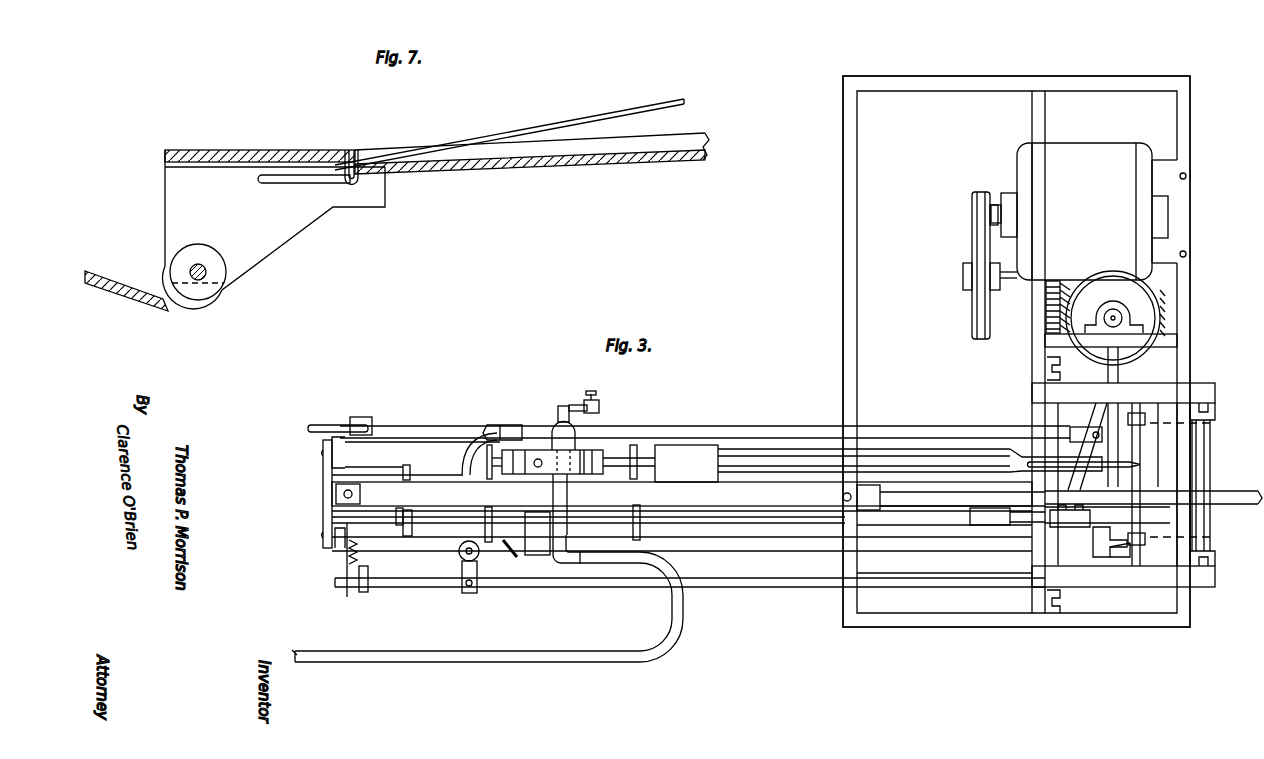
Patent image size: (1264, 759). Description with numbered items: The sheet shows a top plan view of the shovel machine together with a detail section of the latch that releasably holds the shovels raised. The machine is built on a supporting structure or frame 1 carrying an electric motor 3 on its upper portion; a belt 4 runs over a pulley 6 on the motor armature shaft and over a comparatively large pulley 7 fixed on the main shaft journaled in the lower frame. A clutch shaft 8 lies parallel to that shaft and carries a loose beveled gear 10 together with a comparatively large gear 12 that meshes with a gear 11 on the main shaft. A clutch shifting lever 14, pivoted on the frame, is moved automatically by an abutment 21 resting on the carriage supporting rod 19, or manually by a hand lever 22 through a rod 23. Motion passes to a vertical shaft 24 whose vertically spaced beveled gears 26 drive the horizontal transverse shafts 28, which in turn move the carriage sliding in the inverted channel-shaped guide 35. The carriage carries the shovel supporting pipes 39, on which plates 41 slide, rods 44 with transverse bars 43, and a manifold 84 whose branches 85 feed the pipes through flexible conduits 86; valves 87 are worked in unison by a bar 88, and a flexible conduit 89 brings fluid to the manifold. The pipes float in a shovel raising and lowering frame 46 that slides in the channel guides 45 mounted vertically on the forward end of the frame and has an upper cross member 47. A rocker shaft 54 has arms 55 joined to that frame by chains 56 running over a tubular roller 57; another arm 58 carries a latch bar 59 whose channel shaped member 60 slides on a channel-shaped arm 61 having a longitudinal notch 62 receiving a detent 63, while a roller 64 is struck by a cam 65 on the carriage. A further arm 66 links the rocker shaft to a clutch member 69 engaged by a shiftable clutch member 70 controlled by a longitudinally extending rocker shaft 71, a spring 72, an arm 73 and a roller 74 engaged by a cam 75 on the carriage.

In FIG. 3, the supporting structure or frame 1 is at (842, 170).
In FIG. 3, the electric motor 3 is at (1100, 152).
In FIG. 3, the belt 4 is at (975, 251).
In FIG. 3, the pulley 6 is at (972, 200).
In FIG. 3, the comparatively large pulley 7 is at (972, 314).
In FIG. 3, the clutch shaft 8 is at (1010, 282).
In FIG. 3, the beveled gear 10 is at (1163, 300).
In FIG. 3, the gear 11 is at (1058, 302).
In FIG. 3, the comparatively large gear 12 is at (1050, 326).
In FIG. 3, the clutch shifting lever 14 is at (1097, 412).
In FIG. 3, the carriage supporting rod 19 is at (442, 520).
In FIG. 3, the abutment 21 is at (405, 466).
In FIG. 3, the hand lever 22 is at (310, 430).
In FIG. 3, the rod 23 is at (412, 428).
In FIG. 3, the shaft 24 is at (1122, 318).
In FIG. 3, the vertically spaced beveled gears 26 is at (1140, 292).
In FIG. 3, the horizontal transverse shafts 28 is at (1048, 488).
In FIG. 3, the inverted channel-shaped guide 35 is at (682, 494).
In FIG. 3, the shovel supporting pipes 39 is at (902, 500).
In FIG. 3, the plates 41 is at (642, 530).
In FIG. 3, the transverse bars 43 is at (525, 557).
In FIG. 3, the rods 44 is at (622, 458).
In FIG. 3, the cross bars 45 is at (1212, 402).
In FIG. 3, the shovel raising and lowering frame 46 is at (1210, 444).
In FIG. 3, the upper cross member 47 is at (1206, 452).
In FIG. 3, the rocker shaft 54 is at (1140, 486).
In FIG. 3, the arms 55 is at (1135, 410).
In FIG. 3, the chains 56 is at (1152, 420).
In FIG. 3, the tubular roller 57 is at (1183, 524).
In FIG. 3, the arm 58 is at (1133, 468).
In FIG. 7, the latch bar 59 is at (612, 112).
In FIG. 3, the latch bar 59 is at (779, 457).
In FIG. 7, the channel shaped member 60 is at (165, 188).
In FIG. 3, the channel shaped member 60 is at (686, 463).
In FIG. 7, the channel-shaped arm 61 is at (645, 159).
In FIG. 3, the channel-shaped arm 61 is at (878, 436).
In FIG. 7, the longitudinal notch 62 is at (290, 184).
In FIG. 7, the detent 63 is at (355, 186).
In FIG. 7, the roller 64 is at (208, 292).
In FIG. 7, the cam 65 is at (145, 302).
In FIG. 3, the cam 65 is at (598, 458).
In FIG. 3, the arm 66 is at (1092, 528).
In FIG. 3, the clutch member 69 is at (1103, 545).
In FIG. 3, the shiftable clutch member 70 is at (1116, 560).
In FIG. 3, the longitudinally extending rocker shaft 71 is at (795, 584).
In FIG. 3, the spring 72 is at (345, 560).
In FIG. 3, the arm 73 is at (466, 595).
In FIG. 3, the roller 74 is at (460, 562).
In FIG. 3, the cam 75 is at (515, 560).
In FIG. 3, the manifold 84 is at (570, 430).
In FIG. 3, the branches 85 is at (528, 450).
In FIG. 3, the flexible conduits 86 is at (490, 432).
In FIG. 3, the valves 87 is at (562, 432).
In FIG. 3, the bar 88 is at (593, 392).
In FIG. 3, the flexible conduit 89 is at (496, 663).